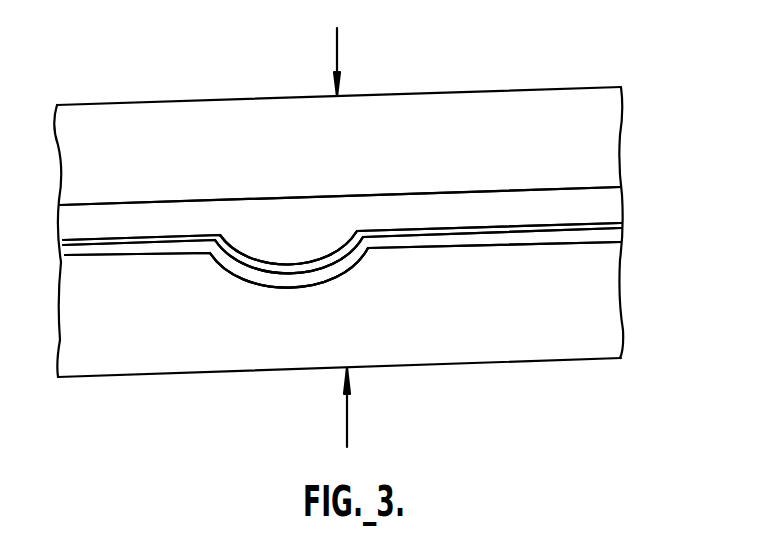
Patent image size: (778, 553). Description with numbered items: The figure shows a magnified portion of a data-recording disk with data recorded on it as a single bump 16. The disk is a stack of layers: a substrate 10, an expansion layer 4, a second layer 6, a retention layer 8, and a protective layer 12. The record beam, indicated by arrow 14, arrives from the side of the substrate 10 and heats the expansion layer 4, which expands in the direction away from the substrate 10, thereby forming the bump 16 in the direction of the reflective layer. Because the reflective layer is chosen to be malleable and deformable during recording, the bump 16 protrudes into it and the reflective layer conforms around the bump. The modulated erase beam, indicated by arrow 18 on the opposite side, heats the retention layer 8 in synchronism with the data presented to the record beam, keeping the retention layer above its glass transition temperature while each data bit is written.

The substrate 10 is at (607, 140).
The first layer 4 is at (607, 205).
The second layer 6 is at (612, 226).
The third layer 8 is at (618, 233).
The protective layer 12 is at (601, 313).
The record beam arrow 14 is at (338, 46).
The bump 16 is at (242, 279).
The erase beam arrow 18 is at (349, 410).